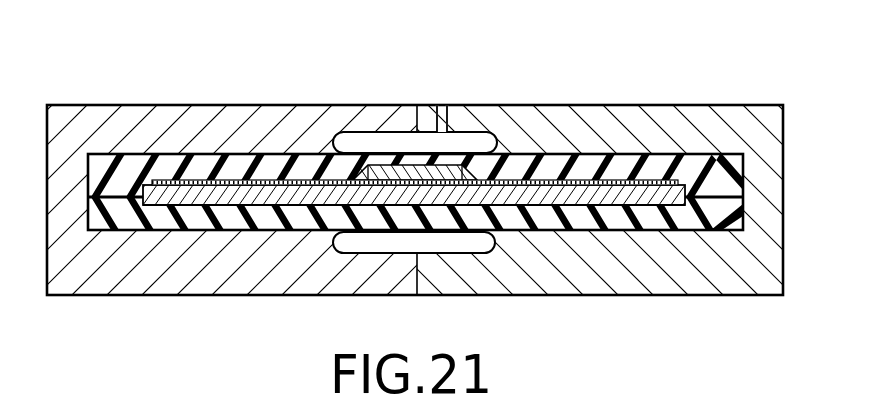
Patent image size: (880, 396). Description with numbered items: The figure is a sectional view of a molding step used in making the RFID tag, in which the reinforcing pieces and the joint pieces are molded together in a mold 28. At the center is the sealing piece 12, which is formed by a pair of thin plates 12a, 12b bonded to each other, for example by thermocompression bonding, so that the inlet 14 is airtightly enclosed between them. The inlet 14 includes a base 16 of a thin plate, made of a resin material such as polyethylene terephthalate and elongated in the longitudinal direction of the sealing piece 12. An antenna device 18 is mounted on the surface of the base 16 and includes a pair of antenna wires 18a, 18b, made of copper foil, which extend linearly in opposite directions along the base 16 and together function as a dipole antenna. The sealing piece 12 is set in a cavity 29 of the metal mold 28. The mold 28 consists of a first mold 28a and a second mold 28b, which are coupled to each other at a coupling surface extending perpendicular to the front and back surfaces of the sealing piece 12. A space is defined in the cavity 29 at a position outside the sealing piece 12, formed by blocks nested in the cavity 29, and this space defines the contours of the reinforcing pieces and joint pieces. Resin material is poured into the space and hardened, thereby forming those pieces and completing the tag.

The sealing piece 12 is at (415, 170).
The thin plate 12a is at (140, 160).
The thin plate 12b is at (131, 227).
The inlet 14 is at (398, 165).
The base 16 is at (642, 198).
The antenna device 18 is at (414, 170).
The antenna wire 18a is at (262, 205).
The antenna wire 18b is at (653, 180).
The mold 28 is at (440, 150).
The first mold 28a is at (81, 107).
The second mold 28b is at (749, 108).
The cavity 29 is at (483, 139).